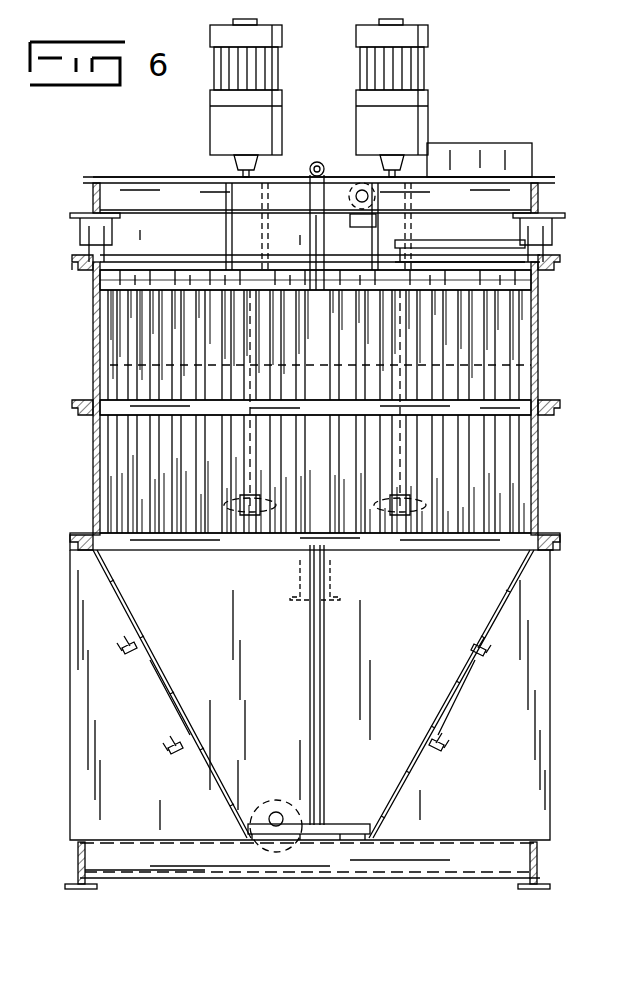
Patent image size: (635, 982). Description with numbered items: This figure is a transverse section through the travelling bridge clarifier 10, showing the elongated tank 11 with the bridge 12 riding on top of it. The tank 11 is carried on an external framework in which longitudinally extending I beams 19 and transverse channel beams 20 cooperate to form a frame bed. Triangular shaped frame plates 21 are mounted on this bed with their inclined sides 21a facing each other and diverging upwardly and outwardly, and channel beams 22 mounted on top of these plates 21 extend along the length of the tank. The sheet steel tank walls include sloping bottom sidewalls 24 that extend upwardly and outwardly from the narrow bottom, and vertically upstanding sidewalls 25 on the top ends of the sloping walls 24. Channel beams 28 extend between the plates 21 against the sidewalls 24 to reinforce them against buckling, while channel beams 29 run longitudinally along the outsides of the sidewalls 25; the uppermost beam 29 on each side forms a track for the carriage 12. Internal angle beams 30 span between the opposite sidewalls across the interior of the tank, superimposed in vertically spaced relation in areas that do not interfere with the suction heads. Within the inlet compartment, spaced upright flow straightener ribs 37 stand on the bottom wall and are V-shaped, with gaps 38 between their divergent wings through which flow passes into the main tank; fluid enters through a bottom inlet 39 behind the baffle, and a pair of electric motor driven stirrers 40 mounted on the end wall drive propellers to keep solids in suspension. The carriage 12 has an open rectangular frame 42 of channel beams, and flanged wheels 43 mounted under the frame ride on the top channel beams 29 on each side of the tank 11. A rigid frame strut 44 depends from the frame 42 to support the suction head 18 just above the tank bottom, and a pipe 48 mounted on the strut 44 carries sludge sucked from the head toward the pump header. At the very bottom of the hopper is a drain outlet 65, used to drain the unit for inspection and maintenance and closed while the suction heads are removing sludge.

The travelling bridge clarifier 10 is at (108, 169).
The elongated tank 11 is at (533, 344).
The bridge 12 is at (552, 190).
The suction head 18 is at (330, 822).
The I beam 19 is at (82, 890).
The transverse channel beam 20 is at (332, 858).
The triangular shaped frame plate 21 is at (83, 747).
The inclined side of frame plate 21a is at (163, 685).
The channel beam 22 is at (79, 535).
The bottom sidewall 24 is at (133, 628).
The vertically upstanding sidewall 25 is at (97, 472).
The channel beam 28 is at (180, 763).
The channel beam 29 is at (78, 262).
The internal angle beam 30 is at (123, 280).
The flow straightener rib 37 is at (420, 375).
The gap 38 is at (268, 525).
The bottom inlet 39 is at (332, 583).
The electric motor driven stirrer 40 is at (278, 72).
The open rectangular frame 42 is at (518, 196).
The flanged wheel 43 is at (96, 236).
The frame strut 44 is at (322, 692).
The pipe 48 is at (322, 660).
The drain outlet 65 is at (276, 812).